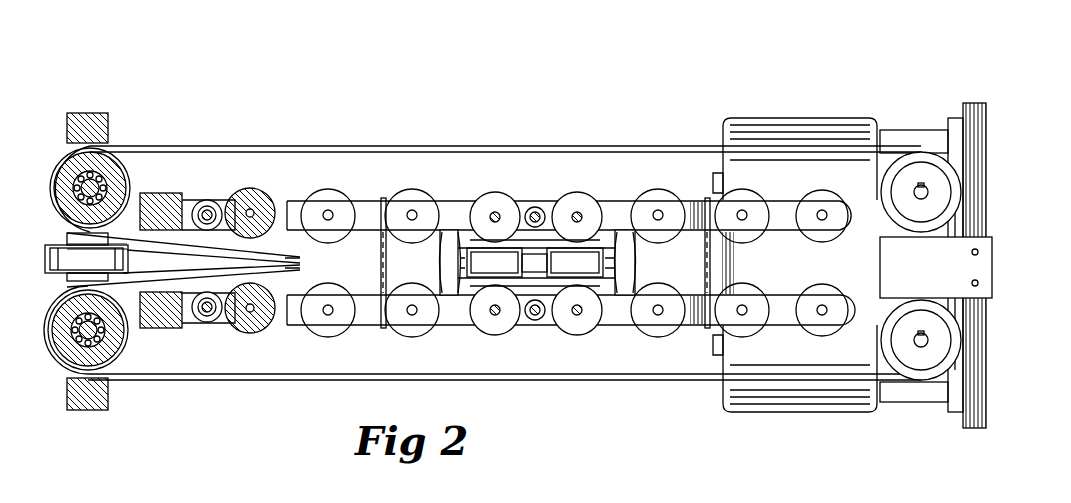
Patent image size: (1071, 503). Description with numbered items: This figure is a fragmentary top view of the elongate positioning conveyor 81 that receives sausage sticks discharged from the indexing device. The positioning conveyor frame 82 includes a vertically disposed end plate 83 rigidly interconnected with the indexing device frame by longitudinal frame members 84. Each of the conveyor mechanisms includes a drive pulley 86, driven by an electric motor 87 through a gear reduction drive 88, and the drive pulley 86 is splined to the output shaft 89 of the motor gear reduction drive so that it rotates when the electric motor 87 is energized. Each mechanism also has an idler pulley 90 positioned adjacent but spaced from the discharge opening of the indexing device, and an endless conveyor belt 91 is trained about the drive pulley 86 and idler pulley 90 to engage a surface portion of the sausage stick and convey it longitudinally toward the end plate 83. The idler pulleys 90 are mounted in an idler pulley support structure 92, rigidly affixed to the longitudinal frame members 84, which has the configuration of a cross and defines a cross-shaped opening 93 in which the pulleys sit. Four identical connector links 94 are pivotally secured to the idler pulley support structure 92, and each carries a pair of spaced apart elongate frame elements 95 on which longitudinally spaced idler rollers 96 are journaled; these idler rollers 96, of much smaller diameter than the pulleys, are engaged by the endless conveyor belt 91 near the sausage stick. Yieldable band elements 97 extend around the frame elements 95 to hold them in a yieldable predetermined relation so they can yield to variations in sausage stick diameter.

The positioning conveyor 81 is at (487, 108).
The positioning conveyor frame 82 is at (700, 222).
The end plate 83 is at (969, 103).
The longitudinal frame members 84 is at (797, 272).
The drive pulley 86 is at (898, 226).
The electric motor 87 is at (810, 118).
The gear reduction drive 88 is at (893, 133).
The output shaft 89 is at (921, 196).
The idler pulley 90 is at (140, 262).
The endless conveyor belt 91 is at (389, 146).
The idler pulley support structure 92 is at (100, 110).
The cross-shaped opening 93 is at (76, 147).
The connector link 94 is at (203, 200).
The frame elements 95 is at (368, 216).
The idler rollers 96 is at (335, 192).
The yieldable band elements 97 is at (397, 200).